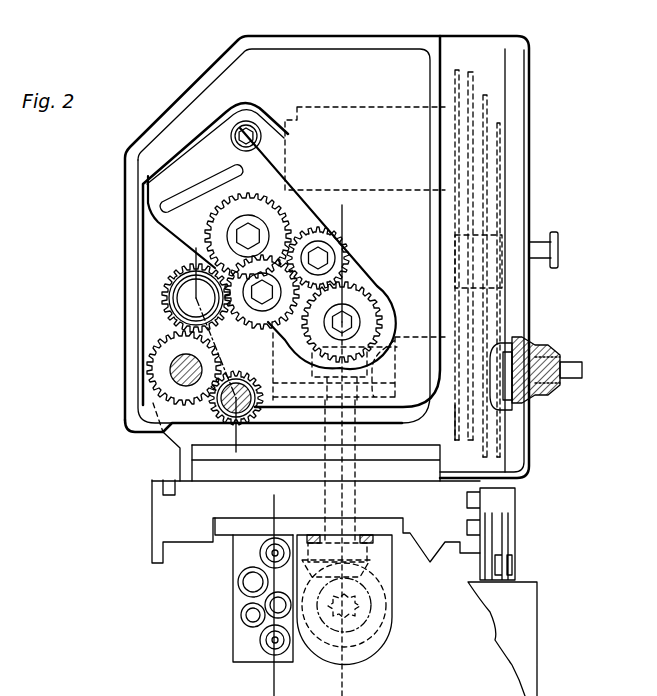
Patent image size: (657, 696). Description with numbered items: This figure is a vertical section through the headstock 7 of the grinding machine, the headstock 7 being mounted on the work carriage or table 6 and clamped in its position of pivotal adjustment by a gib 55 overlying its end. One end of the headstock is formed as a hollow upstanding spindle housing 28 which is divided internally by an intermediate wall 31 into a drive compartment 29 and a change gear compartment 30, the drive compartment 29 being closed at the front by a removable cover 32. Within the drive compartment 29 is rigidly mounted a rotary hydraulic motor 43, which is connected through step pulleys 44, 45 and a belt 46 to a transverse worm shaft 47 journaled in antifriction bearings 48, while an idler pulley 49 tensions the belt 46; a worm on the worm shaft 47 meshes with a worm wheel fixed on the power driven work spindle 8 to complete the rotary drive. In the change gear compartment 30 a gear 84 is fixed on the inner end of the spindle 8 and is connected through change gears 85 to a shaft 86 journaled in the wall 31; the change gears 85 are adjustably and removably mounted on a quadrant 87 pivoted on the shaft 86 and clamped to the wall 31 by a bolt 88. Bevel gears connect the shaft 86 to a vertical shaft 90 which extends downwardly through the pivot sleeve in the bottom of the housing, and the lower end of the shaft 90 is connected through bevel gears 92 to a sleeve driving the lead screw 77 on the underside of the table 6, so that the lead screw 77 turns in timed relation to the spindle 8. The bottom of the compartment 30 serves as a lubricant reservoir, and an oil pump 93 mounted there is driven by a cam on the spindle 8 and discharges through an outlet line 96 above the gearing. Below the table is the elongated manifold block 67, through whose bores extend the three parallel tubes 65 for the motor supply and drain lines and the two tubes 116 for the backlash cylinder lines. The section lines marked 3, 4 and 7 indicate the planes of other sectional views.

The spindle housing 28 is at (223, 58).
The change gear compartment 30 is at (208, 86).
The removable cover 32 is at (531, 160).
The outlet line 96 is at (243, 103).
The bolt 88 is at (252, 125).
The quadrant 87 is at (362, 277).
The gear 84 is at (173, 275).
The work spindle 8 is at (172, 302).
The change gears 85 is at (358, 258).
The shaft 86 is at (348, 320).
The motor 43 is at (360, 107).
The step pulley 44 is at (492, 82).
The drive compartment 29 is at (500, 110).
The step pulley 45 is at (472, 326).
The belt 46 is at (506, 216).
The idler pulley 49 is at (508, 295).
The worm shaft 47 is at (385, 338).
The antifriction bearings 48 is at (386, 418).
The intermediate wall 31 is at (457, 435).
The section line 3- 3 is at (333, 212).
The section line 4- 4 is at (196, 248).
The headstock 7 is at (308, 35).
The oil pump 93 is at (165, 442).
The gib 55 is at (240, 470).
The work carriage or table 6 is at (158, 505).
The vertical shaft 90 is at (352, 497).
The manifold block 67 is at (235, 605).
The tubes 65 is at (270, 548).
The tubes 116 is at (255, 617).
The lead screw 77 is at (388, 618).
The bevel gears 92 is at (380, 575).